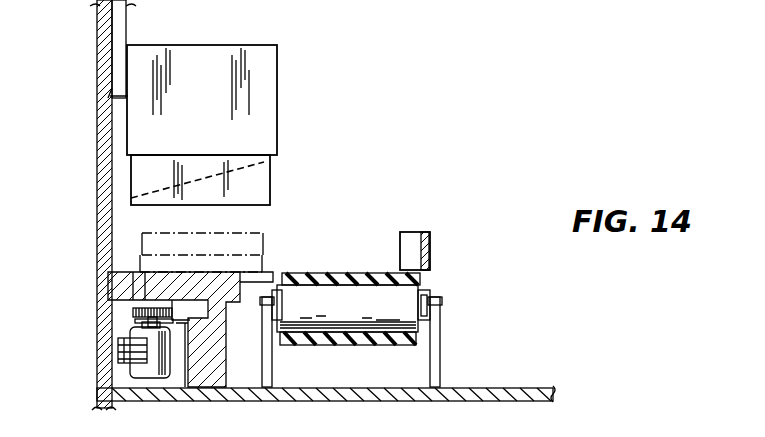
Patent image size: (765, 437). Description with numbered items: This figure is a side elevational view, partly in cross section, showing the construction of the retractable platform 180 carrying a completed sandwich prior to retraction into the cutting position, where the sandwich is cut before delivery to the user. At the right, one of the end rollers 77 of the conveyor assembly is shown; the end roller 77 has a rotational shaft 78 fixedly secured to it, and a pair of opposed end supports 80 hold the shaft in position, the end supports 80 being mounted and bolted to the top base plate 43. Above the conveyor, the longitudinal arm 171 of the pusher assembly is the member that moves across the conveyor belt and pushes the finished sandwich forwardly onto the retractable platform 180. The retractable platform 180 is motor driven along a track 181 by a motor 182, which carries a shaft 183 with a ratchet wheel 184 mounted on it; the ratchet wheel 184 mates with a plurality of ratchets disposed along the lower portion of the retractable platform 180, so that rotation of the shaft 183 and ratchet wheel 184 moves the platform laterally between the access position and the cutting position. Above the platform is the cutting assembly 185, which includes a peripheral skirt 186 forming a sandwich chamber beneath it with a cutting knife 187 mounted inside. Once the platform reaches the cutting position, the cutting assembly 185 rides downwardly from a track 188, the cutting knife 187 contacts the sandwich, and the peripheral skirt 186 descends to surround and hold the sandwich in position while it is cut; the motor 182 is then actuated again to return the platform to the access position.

The track 188 is at (97, 127).
The cutting assembly 185 is at (214, 106).
The peripheral skirt 186 is at (270, 163).
The cutting knife 187 is at (250, 172).
The retractable platform 180 is at (177, 282).
The track 181 is at (215, 372).
The ratchet wheel 184 is at (132, 311).
The shaft 183 is at (135, 322).
The motor 182 is at (120, 352).
The end roller 77 is at (357, 320).
The longitudinal arm 171 is at (418, 232).
The rotational shaft 78 is at (440, 305).
The end supports 80 is at (272, 361).
The top base plate 43 is at (530, 388).